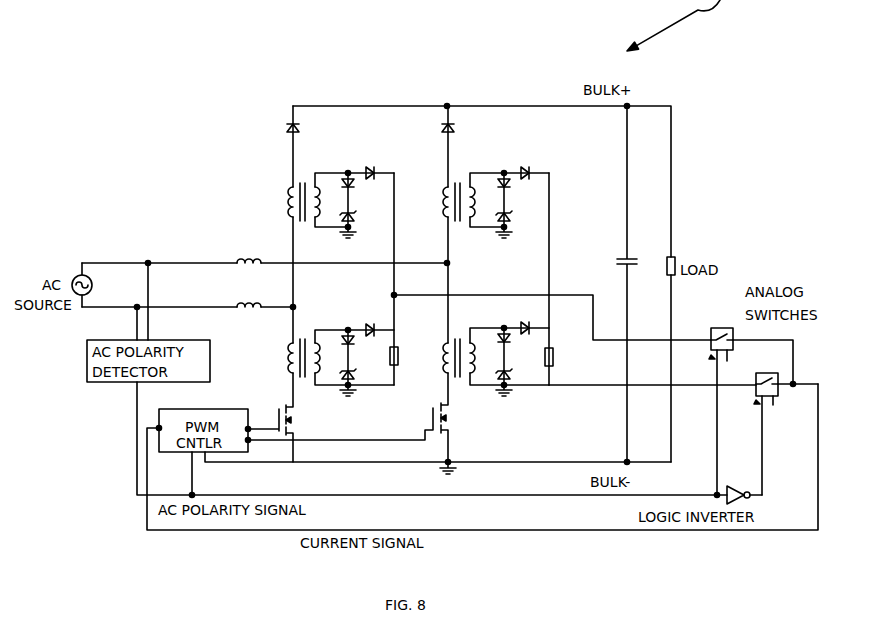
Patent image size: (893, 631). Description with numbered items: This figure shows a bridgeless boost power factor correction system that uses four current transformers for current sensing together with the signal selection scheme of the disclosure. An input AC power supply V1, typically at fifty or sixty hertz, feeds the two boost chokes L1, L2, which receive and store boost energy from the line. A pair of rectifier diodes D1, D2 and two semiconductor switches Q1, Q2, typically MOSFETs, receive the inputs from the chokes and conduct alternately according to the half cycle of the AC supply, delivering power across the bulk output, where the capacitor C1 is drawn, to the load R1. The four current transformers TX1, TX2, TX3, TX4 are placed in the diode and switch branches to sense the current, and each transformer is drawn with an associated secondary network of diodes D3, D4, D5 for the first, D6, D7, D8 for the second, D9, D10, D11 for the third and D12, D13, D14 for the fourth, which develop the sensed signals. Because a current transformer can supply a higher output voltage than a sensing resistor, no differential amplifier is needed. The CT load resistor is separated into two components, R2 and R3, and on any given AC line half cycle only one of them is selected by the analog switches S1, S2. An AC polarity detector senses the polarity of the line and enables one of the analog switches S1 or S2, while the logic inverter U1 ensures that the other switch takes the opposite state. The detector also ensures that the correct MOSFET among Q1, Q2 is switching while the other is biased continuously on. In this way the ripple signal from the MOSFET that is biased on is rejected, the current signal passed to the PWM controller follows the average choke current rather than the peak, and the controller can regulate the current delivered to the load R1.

The rectifier diode D1 is at (305, 146).
The rectifier diode D2 is at (460, 146).
The diode D3 is at (337, 190).
The diode D4 is at (361, 223).
The diode D5 is at (372, 162).
The diode D6 is at (532, 162).
The diode D7 is at (495, 190).
The diode D8 is at (495, 221).
The diode D9 is at (357, 376).
The diode D10 is at (334, 347).
The diode D11 is at (371, 319).
The diode D12 is at (524, 318).
The diode D13 is at (487, 346).
The diode D14 is at (487, 386).
The transformer TX1 is at (321, 200).
The transformer TX2 is at (479, 200).
The transformer TX3 is at (321, 357).
The transformer TX4 is at (479, 359).
The boost choke L1 is at (249, 272).
The boost choke L2 is at (249, 316).
The semiconductor switch Q1 is at (270, 417).
The semiconductor switch Q2 is at (348, 417).
The load R1 is at (688, 351).
The current sensing resistor R2 is at (560, 350).
The current sensing resistor R3 is at (403, 349).
The bulk capacitor C1 is at (619, 284).
The analog switch S1 is at (721, 402).
The analog switch S2 is at (766, 424).
The logic inverter U1 is at (744, 484).
The input AC power supply V1 is at (70, 282).